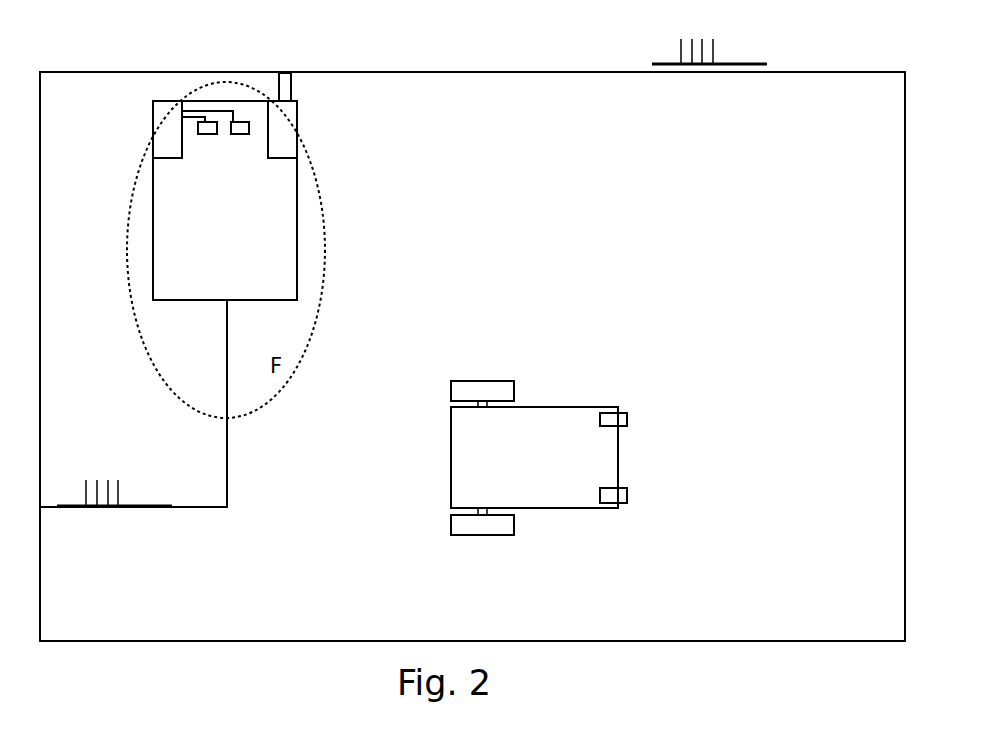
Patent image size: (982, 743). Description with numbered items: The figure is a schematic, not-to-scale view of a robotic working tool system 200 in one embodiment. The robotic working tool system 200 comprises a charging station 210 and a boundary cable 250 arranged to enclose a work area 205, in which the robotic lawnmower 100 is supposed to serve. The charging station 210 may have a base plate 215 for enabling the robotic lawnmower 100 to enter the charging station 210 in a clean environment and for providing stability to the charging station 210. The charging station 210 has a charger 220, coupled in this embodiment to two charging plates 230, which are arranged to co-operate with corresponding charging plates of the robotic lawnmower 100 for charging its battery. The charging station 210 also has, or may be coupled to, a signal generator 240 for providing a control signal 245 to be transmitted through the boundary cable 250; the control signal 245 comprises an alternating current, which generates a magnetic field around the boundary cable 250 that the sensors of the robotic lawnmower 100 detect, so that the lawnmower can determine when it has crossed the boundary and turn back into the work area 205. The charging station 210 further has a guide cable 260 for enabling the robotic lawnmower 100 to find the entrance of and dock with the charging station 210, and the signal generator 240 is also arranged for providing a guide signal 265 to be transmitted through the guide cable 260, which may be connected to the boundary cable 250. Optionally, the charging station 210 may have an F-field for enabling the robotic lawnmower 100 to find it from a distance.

The robotic lawnmower 100 is at (520, 508).
The robotic working tool system 200 is at (143, 88).
The work area 205 is at (557, 308).
The charging station 210 is at (153, 162).
The base plate 215 is at (277, 235).
The charger 220 is at (165, 108).
The charging plates 230 is at (210, 122).
The signal generator 240 is at (297, 138).
The control signal 245 is at (709, 50).
The boundary cable 250 is at (132, 641).
The guide cable 260 is at (227, 337).
The guide signal 265 is at (114, 480).